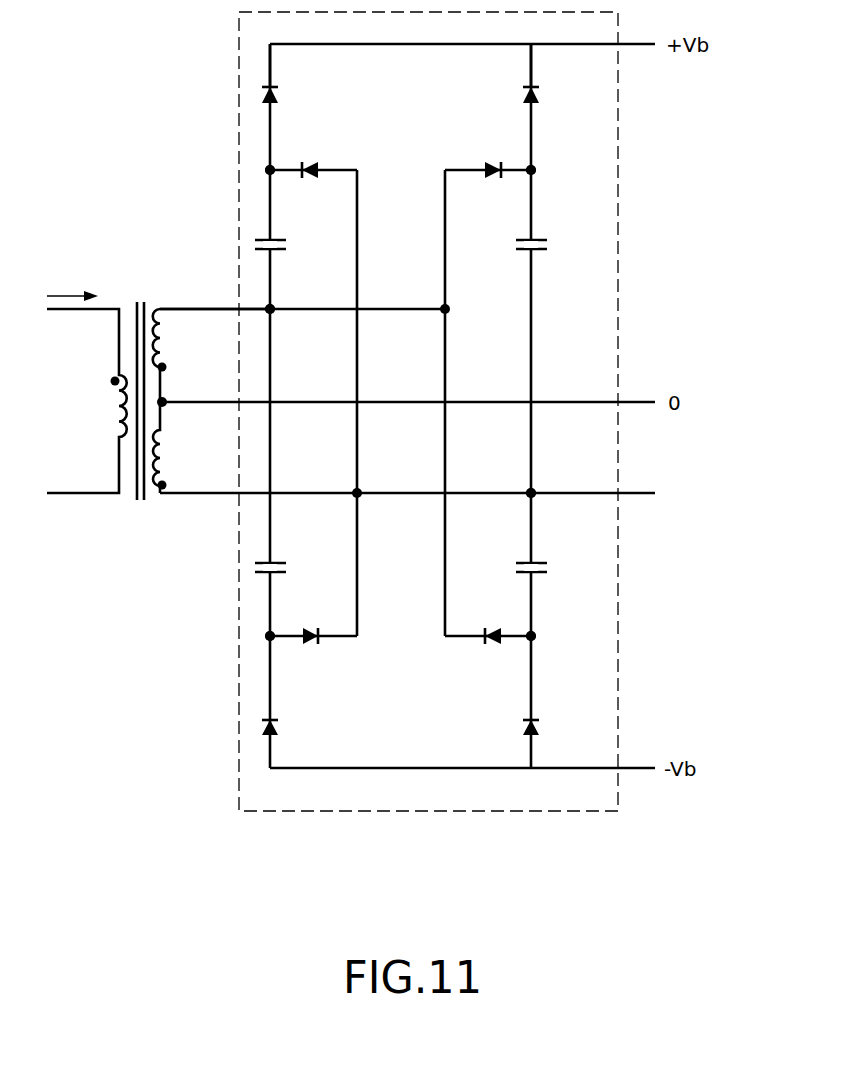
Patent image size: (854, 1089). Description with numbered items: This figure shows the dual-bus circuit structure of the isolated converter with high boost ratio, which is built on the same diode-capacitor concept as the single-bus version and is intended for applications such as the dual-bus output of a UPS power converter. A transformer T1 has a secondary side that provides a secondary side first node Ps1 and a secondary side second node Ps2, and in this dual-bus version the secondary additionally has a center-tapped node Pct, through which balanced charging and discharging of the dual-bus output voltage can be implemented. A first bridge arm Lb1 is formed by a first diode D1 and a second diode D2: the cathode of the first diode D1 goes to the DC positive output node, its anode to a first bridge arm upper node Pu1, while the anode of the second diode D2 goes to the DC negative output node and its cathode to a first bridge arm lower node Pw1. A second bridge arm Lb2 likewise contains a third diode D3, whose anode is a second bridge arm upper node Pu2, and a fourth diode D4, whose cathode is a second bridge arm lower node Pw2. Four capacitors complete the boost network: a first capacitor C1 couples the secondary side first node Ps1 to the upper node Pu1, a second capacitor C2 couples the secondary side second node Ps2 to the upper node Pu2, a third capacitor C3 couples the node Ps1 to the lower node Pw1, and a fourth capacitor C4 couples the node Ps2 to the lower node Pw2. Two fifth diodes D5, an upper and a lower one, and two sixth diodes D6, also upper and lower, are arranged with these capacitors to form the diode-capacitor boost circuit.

The transformer T1 is at (154, 398).
The center-tapped node Pct is at (164, 403).
The first diode D1 is at (285, 91).
The second diode D2 is at (285, 721).
The third diode D3 is at (547, 91).
The fourth diode D4 is at (550, 721).
The fifth diode D5 is at (315, 406).
The sixth diode D6 is at (488, 406).
The first capacitor C1 is at (285, 230).
The second capacitor C2 is at (546, 230).
The third capacitor C3 is at (286, 552).
The fourth capacitor C4 is at (544, 550).
The first bridge arm Lb1 is at (270, 62).
The second bridge arm Lb2 is at (533, 57).
The first bridge arm upper node Pu1 is at (270, 170).
The second bridge arm upper node Pu2 is at (535, 168).
The secondary side first node Ps1 is at (270, 309).
The secondary side second node Ps2 is at (535, 490).
The first bridge arm lower node Pw1 is at (270, 636).
The second bridge arm lower node Pw2 is at (535, 633).